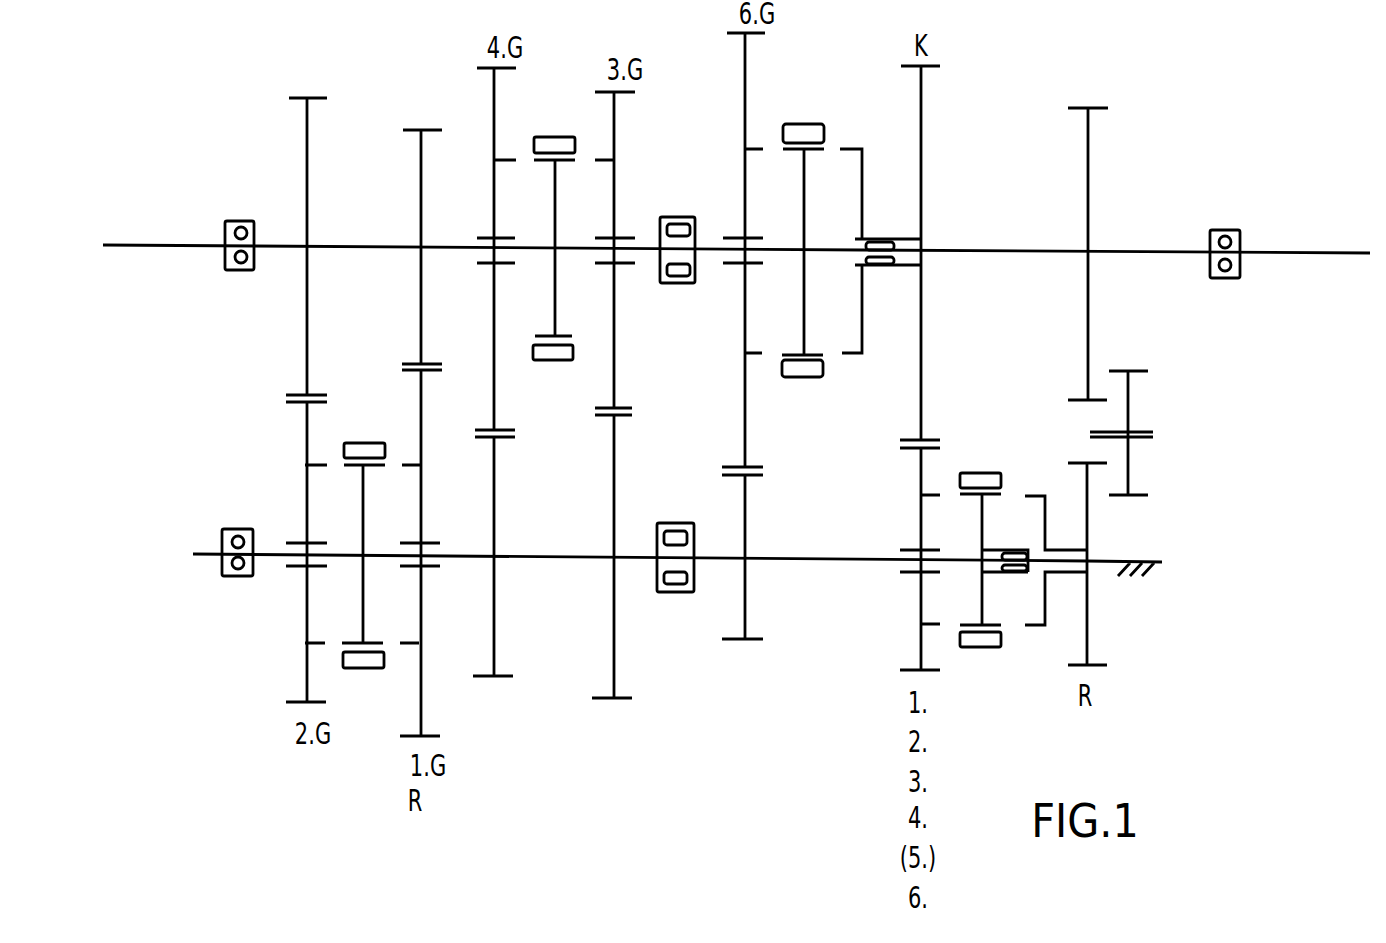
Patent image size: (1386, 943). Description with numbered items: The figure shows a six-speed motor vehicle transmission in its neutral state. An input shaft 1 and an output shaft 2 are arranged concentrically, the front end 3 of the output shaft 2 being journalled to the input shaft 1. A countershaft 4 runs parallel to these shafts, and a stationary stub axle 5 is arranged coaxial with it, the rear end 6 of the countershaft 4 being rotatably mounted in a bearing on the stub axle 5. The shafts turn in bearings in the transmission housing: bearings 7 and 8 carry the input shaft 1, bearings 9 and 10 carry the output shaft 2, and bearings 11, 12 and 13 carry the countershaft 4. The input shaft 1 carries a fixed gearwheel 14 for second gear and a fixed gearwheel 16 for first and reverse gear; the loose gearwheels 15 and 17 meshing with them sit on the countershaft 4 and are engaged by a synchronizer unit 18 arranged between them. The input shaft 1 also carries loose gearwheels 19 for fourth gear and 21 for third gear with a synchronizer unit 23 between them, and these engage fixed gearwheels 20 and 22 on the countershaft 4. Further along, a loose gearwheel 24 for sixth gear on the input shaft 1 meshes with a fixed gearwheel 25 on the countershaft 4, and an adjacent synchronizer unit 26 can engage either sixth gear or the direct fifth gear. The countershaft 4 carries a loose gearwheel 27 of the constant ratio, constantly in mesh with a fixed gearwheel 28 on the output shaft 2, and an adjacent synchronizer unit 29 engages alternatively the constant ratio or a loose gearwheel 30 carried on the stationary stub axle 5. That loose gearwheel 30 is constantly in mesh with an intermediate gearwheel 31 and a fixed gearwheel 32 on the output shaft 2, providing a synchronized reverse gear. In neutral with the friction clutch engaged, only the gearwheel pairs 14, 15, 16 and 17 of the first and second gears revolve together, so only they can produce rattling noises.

The input shaft 1 is at (151, 248).
The output shaft 2 is at (1343, 257).
The front end of the output shaft 3 is at (880, 240).
The countershaft 4 is at (560, 559).
The stub axle 5 is at (1113, 560).
The rear end of the countershaft 6 is at (1013, 551).
The bearing 7 is at (239, 263).
The bearing 8 is at (678, 276).
The bearing 9 is at (878, 264).
The bearing 10 is at (1224, 271).
The bearing 11 is at (237, 569).
The bearing 12 is at (672, 583).
The bearing 13 is at (1017, 575).
The fixed gearwheel for the 2nd gear 14 is at (307, 150).
The loose gearwheel 15 is at (305, 438).
The fixed gearwheel for the 1st gear and the reverse gear 16 is at (421, 168).
The loose gearwheel 17 is at (420, 405).
The synchronizer unit 18 is at (363, 524).
The loose gearwheel for the 4th gear 19 is at (494, 133).
The fixed gearwheel 20 is at (493, 502).
The loose gearwheel for the 3rd gear 21 is at (614, 125).
The fixed gearwheel 22 is at (612, 490).
The synchronizer unit 23 is at (555, 203).
The loose gearwheel for the 6th gear 24 is at (745, 76).
The fixed gearwheel 25 is at (740, 500).
The synchronizer unit 26 is at (803, 213).
The loose gearwheel of the constant ratio 27 is at (918, 515).
The fixed gearwheel 28 is at (920, 110).
The synchronizer unit 29 is at (981, 523).
The loose gearwheel 30 is at (1085, 488).
The intermediate gearwheel 31 is at (1133, 455).
The fixed gearwheel 32 is at (1092, 148).